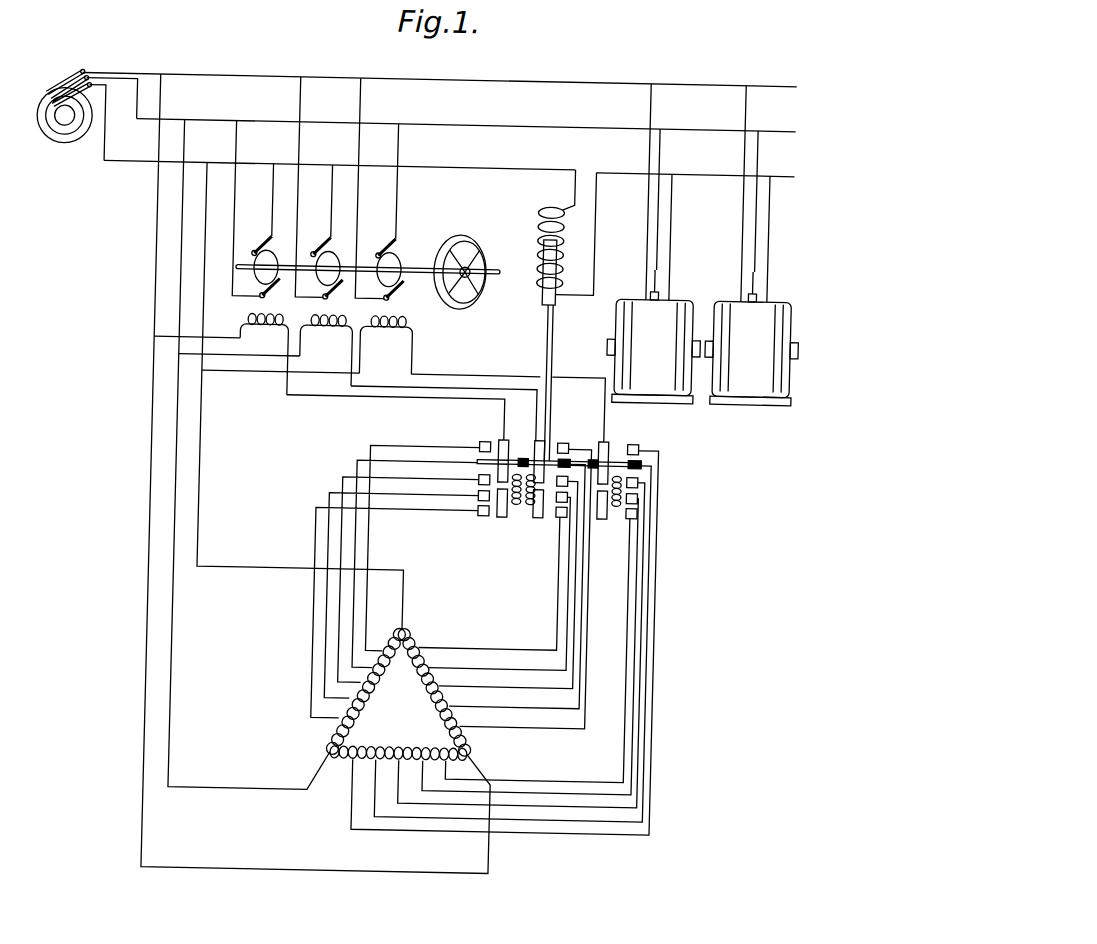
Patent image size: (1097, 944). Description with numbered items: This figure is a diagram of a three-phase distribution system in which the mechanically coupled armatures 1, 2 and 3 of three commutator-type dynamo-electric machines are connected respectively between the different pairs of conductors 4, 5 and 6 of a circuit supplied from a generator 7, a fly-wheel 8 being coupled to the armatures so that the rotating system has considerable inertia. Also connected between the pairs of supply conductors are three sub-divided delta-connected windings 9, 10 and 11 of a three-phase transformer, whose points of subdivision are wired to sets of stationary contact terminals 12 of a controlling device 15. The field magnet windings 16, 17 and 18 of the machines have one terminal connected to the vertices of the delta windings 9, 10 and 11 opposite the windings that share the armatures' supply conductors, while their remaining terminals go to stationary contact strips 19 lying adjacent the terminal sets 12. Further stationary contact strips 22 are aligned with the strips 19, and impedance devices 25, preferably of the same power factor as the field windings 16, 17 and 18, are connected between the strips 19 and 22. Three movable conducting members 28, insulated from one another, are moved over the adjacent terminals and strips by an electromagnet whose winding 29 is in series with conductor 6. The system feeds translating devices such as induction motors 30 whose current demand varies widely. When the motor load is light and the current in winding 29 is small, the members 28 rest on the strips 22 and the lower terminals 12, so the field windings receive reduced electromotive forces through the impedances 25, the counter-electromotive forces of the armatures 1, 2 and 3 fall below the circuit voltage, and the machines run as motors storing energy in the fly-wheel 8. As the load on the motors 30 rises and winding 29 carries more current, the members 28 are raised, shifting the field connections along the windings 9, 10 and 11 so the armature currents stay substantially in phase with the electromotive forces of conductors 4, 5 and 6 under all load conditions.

The armature 1 is at (268, 259).
The armature 2 is at (328, 258).
The armature 3 is at (394, 263).
The conductor 4 is at (440, 70).
The conductor 5 is at (467, 116).
The conductor 6 is at (449, 158).
The generator 7 is at (64, 118).
The fly-wheel 8 is at (470, 253).
The delta-connected winding 9 is at (365, 691).
The delta-connected winding 10 is at (434, 692).
The delta-connected winding 11 is at (399, 755).
The stationary contact terminals 12 is at (482, 519).
The controlling device 15 is at (570, 418).
The field magnet winding 16 is at (264, 353).
The field magnet winding 17 is at (326, 350).
The field magnet winding 18 is at (385, 345).
The stationary contact strip 19 is at (506, 445).
The stationary contact strip 22 is at (499, 521).
The impedance device 25 is at (520, 508).
The movable conducting member 28 is at (507, 462).
The winding 29 is at (558, 271).
The induction motor 30 is at (703, 337).